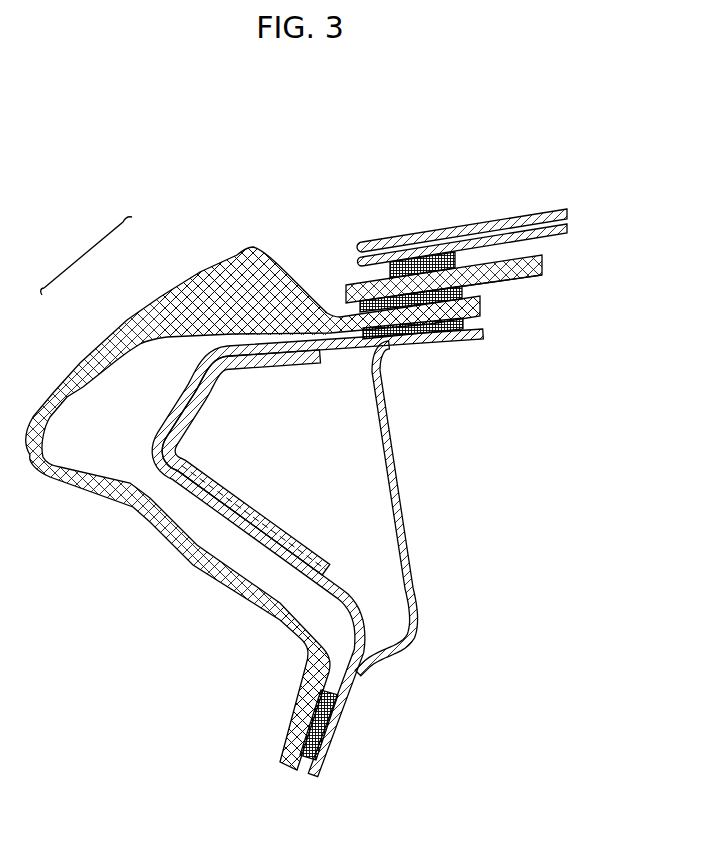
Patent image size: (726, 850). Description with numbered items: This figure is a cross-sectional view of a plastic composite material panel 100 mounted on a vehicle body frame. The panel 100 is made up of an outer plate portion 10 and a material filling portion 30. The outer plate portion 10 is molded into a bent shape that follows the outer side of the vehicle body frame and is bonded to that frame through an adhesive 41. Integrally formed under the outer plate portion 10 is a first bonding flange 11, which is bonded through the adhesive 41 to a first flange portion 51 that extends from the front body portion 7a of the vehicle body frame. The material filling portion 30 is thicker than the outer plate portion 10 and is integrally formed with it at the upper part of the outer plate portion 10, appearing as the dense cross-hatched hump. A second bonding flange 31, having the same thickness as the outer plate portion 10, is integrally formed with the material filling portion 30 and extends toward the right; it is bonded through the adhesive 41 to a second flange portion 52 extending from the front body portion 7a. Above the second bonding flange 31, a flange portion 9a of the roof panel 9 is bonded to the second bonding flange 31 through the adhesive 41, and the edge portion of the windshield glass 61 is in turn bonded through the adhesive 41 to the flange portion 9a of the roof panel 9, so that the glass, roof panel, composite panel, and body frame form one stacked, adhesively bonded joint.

The plastic composite material panel 100 is at (78, 250).
The outer plate portion 10 is at (78, 362).
The first bonding flange 11 is at (300, 717).
The material filling portion 30 is at (173, 290).
The second bonding flange 31 is at (480, 303).
The roof panel 9 is at (550, 258).
The flange portion 9a is at (513, 278).
The windshield glass 61 is at (473, 222).
The adhesive 41 is at (423, 262).
The first flange portion 51 is at (347, 683).
The second flange portion 52 is at (458, 336).
The front body portion 7a is at (413, 560).